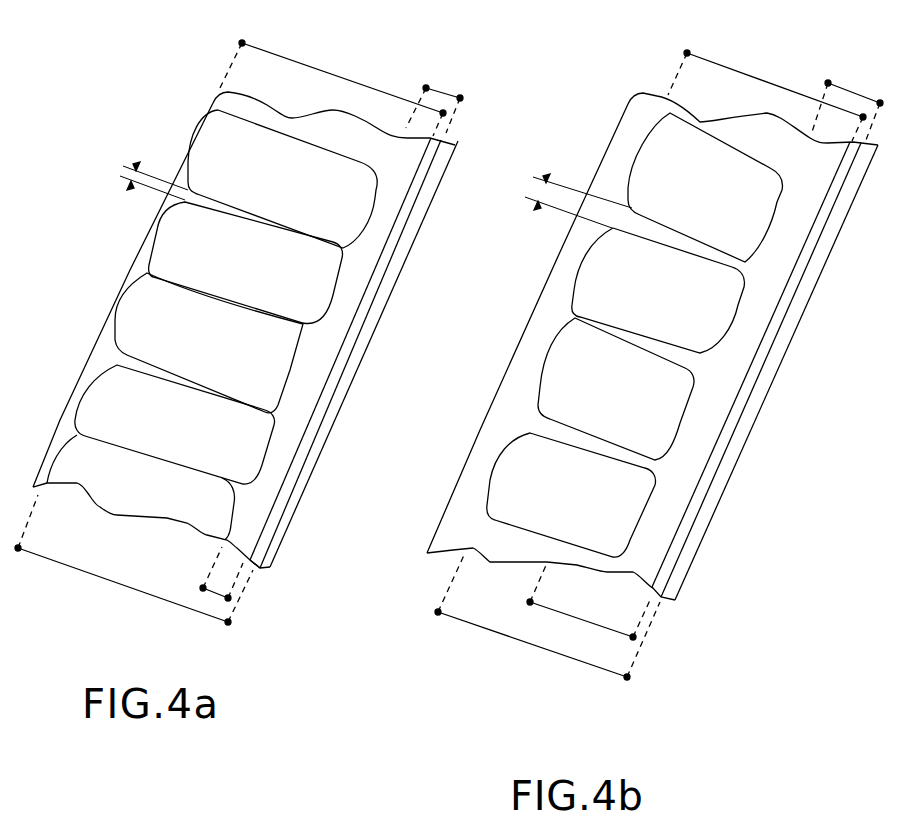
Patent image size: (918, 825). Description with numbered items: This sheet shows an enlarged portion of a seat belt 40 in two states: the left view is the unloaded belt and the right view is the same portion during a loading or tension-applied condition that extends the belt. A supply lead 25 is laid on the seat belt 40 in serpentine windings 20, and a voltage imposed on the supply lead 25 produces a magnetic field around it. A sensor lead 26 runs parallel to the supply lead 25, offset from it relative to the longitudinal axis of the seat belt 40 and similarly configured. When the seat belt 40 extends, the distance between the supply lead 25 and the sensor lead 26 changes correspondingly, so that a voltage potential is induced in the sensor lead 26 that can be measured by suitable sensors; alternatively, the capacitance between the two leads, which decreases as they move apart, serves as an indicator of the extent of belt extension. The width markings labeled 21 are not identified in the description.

In FIG. 4a, the serpentine windings 20 is at (235, 512).
In FIG. 4a, the strip width dimension 21 is at (334, 77).
In FIG. 4b, the strip width dimension 21 is at (523, 643).
In FIG. 4a, the supply lead 25 is at (193, 392).
In FIG. 4b, the supply lead 25 is at (603, 458).
In FIG. 4a, the sensor lead 26 is at (268, 448).
In FIG. 4b, the sensor lead 26 is at (643, 517).
In FIG. 4a, the seat belt 40 is at (370, 230).
In FIG. 4b, the seat belt 40 is at (760, 306).